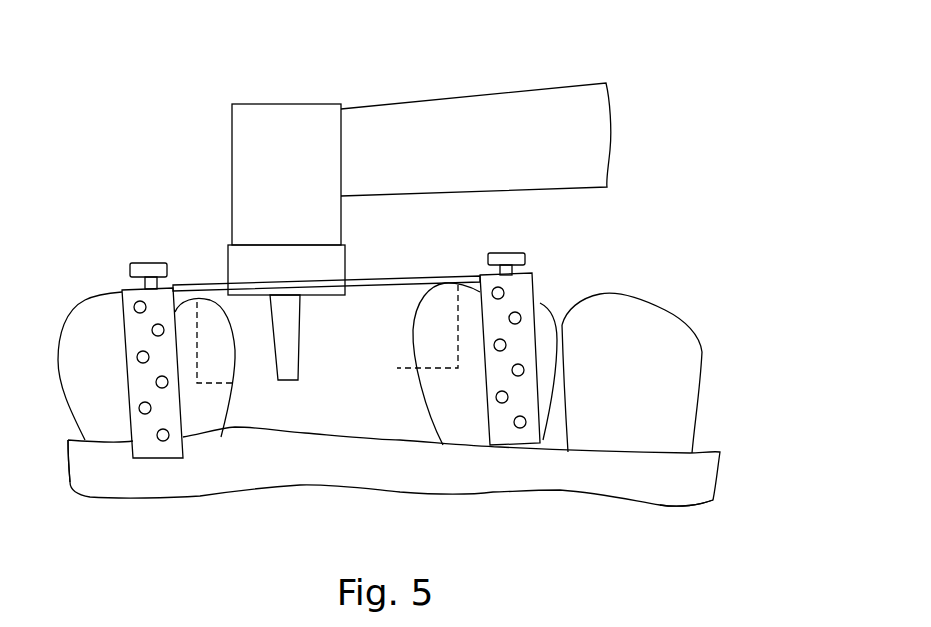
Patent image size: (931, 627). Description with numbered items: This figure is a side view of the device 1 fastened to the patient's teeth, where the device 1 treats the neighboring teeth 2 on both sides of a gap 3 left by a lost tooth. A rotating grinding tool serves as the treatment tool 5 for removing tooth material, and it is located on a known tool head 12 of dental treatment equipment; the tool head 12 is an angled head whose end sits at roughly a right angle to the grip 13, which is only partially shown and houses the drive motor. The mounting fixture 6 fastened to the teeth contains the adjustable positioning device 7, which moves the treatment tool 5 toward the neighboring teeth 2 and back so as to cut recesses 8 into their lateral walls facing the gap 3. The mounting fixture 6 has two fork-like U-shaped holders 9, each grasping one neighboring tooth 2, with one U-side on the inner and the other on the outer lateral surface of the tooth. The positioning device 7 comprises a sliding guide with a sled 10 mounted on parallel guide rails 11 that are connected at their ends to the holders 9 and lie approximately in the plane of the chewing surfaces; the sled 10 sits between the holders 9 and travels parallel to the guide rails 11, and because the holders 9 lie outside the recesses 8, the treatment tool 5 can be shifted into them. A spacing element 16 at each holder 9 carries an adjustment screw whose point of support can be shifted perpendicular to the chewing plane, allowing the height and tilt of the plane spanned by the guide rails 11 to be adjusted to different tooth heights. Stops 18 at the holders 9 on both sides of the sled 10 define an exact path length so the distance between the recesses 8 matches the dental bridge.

The device 1 is at (140, 143).
The neighboring teeth 2 is at (110, 383).
The gap 3 is at (305, 430).
The treatment tool 5 is at (293, 346).
The mounting fixture 6 is at (157, 470).
The positioning device 7 is at (337, 299).
The recesses 8 is at (215, 350).
The U-shaped holders 9 is at (128, 298).
The sled 10 is at (238, 270).
The guide rails 11 is at (408, 283).
The tool head 12 is at (277, 120).
The grip 13 is at (467, 108).
The spacing element 16 is at (135, 282).
The stops 18 is at (177, 279).